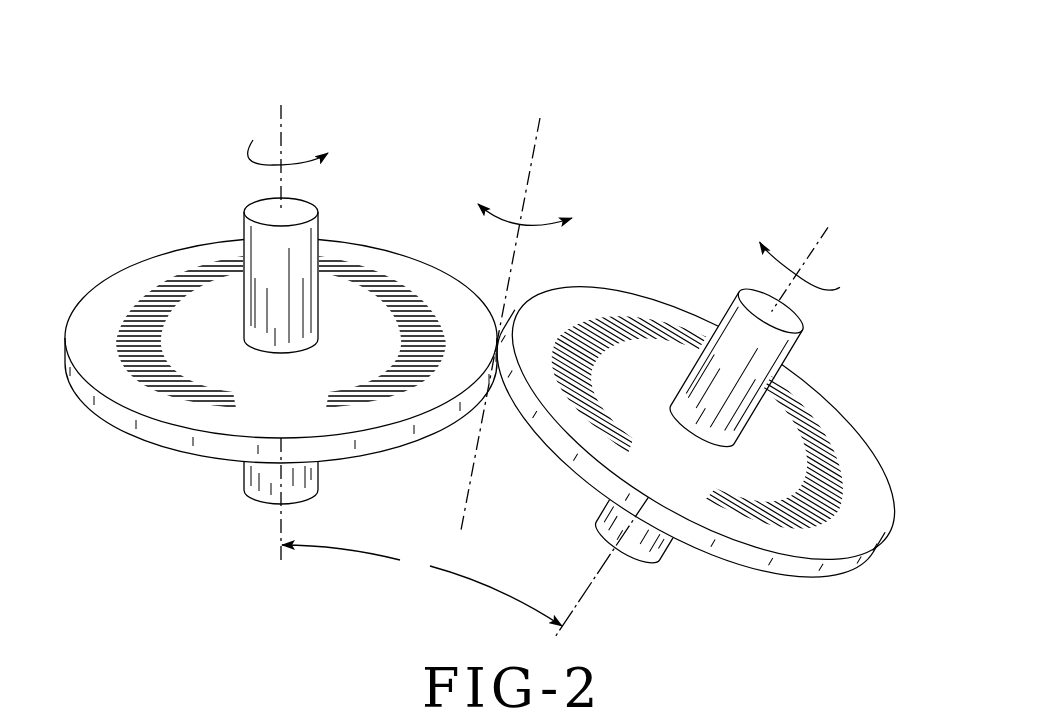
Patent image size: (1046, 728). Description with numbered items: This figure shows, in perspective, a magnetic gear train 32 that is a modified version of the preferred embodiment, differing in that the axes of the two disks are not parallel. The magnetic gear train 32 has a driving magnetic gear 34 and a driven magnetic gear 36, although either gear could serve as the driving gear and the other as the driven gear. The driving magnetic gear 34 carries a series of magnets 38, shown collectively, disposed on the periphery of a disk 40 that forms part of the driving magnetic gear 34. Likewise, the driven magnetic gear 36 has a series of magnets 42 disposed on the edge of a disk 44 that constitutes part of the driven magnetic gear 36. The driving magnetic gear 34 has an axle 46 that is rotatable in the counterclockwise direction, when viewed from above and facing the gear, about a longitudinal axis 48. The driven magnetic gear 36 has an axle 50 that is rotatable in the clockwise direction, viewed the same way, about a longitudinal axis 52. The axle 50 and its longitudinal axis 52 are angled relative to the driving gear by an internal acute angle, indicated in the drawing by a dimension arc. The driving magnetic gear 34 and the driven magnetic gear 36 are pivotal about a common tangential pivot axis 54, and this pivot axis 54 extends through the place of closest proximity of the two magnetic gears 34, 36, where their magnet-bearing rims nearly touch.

The magnetic gear train 32 is at (681, 188).
The driving magnetic gear 34 is at (176, 216).
The driven magnetic gear 36 is at (863, 384).
The series of magnets 38 is at (100, 285).
The disk 40 is at (150, 430).
The series of magnets 42 is at (887, 497).
The disk 44 is at (800, 568).
The axle 46 is at (318, 226).
The longitudinal axis 48 is at (283, 127).
The axle 50 is at (727, 312).
The longitudinal axis 52 is at (815, 248).
The common tangential pivot axis 54 is at (583, 138).